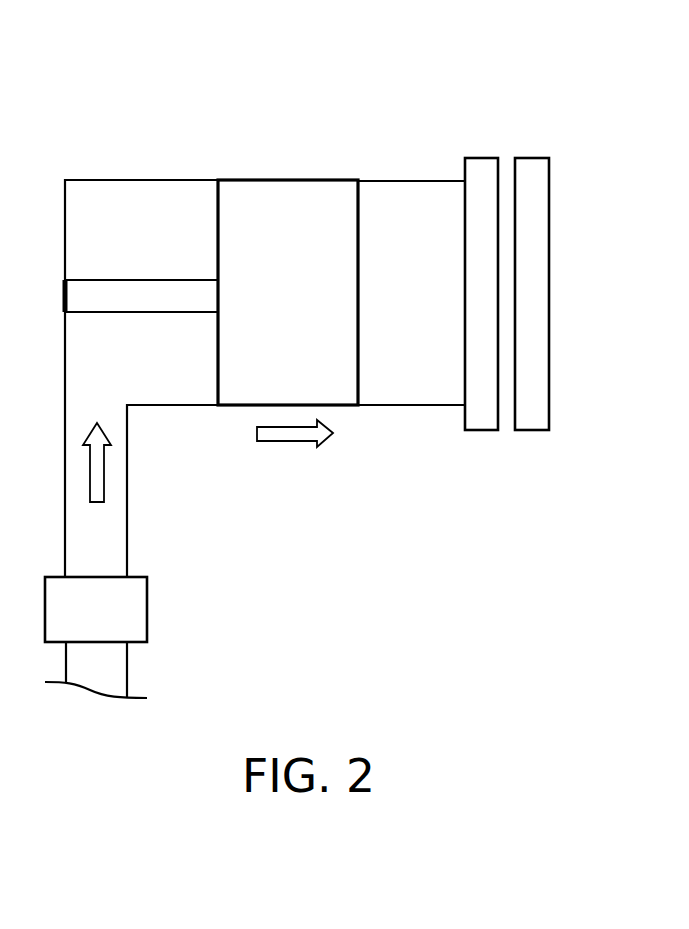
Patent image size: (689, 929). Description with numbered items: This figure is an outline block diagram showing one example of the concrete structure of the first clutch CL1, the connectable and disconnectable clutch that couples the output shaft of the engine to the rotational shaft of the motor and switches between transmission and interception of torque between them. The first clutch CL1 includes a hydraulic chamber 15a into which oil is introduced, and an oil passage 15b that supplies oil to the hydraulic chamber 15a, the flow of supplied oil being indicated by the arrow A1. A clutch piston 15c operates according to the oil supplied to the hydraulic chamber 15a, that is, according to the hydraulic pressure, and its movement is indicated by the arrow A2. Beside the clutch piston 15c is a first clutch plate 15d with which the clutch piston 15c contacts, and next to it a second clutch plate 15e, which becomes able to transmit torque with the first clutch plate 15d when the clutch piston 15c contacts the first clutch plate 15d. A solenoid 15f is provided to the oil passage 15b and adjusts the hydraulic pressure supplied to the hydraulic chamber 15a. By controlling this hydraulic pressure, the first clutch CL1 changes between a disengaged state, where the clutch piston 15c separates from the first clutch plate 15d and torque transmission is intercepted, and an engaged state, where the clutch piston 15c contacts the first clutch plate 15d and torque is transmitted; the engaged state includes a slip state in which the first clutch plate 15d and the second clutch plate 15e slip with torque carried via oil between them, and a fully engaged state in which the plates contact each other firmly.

The first clutch CL1 is at (253, 95).
The hydraulic chamber 15a is at (135, 180).
The oil passage 15b is at (127, 505).
The clutch piston 15c is at (305, 200).
The first clutch plate 15d is at (486, 158).
The second clutch plate 15e is at (531, 158).
The solenoid 15f is at (147, 607).
The arrow A1 is at (97, 447).
The arrow A2 is at (295, 448).